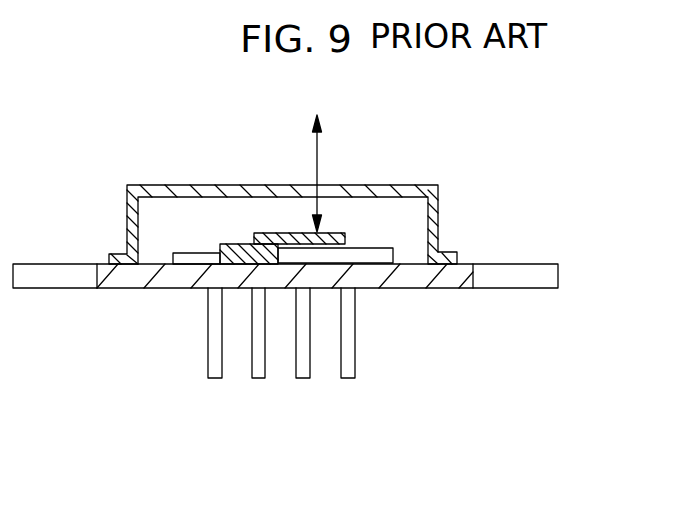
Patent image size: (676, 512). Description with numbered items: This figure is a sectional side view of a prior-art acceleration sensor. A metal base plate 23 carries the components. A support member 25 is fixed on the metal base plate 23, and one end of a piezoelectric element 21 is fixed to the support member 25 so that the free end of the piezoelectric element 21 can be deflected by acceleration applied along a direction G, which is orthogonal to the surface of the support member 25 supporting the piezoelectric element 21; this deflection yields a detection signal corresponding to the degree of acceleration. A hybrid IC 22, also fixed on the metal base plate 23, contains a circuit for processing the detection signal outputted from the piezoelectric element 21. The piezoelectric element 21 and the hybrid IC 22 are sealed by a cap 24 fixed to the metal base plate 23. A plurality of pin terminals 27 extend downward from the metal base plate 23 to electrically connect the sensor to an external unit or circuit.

The piezoelectric element 21 is at (333, 232).
The hybrid IC 22 is at (178, 253).
The metal base plate 23 is at (525, 264).
The cap 24 is at (440, 213).
The support member 25 is at (225, 243).
The pin terminals 27 is at (250, 358).
The direction G is at (313, 162).